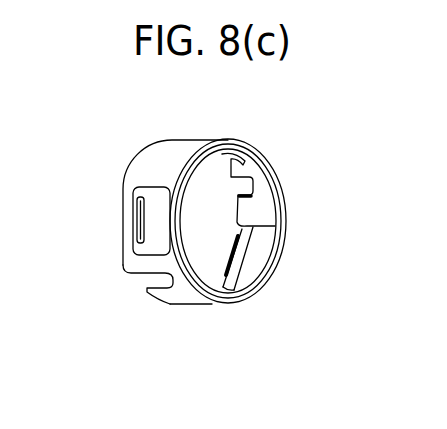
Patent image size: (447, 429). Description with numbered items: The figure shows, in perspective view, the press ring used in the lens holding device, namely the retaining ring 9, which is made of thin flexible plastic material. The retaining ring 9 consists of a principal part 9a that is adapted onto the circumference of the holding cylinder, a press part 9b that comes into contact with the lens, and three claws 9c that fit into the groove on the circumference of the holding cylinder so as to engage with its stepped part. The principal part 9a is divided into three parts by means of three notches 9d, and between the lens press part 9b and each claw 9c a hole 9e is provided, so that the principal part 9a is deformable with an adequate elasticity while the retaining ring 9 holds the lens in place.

The retaining ring 9 is at (187, 297).
The principal part 9a is at (185, 147).
The press part 9b is at (263, 175).
The claws 9c is at (140, 222).
The notches 9d is at (152, 278).
The hole 9e is at (155, 212).